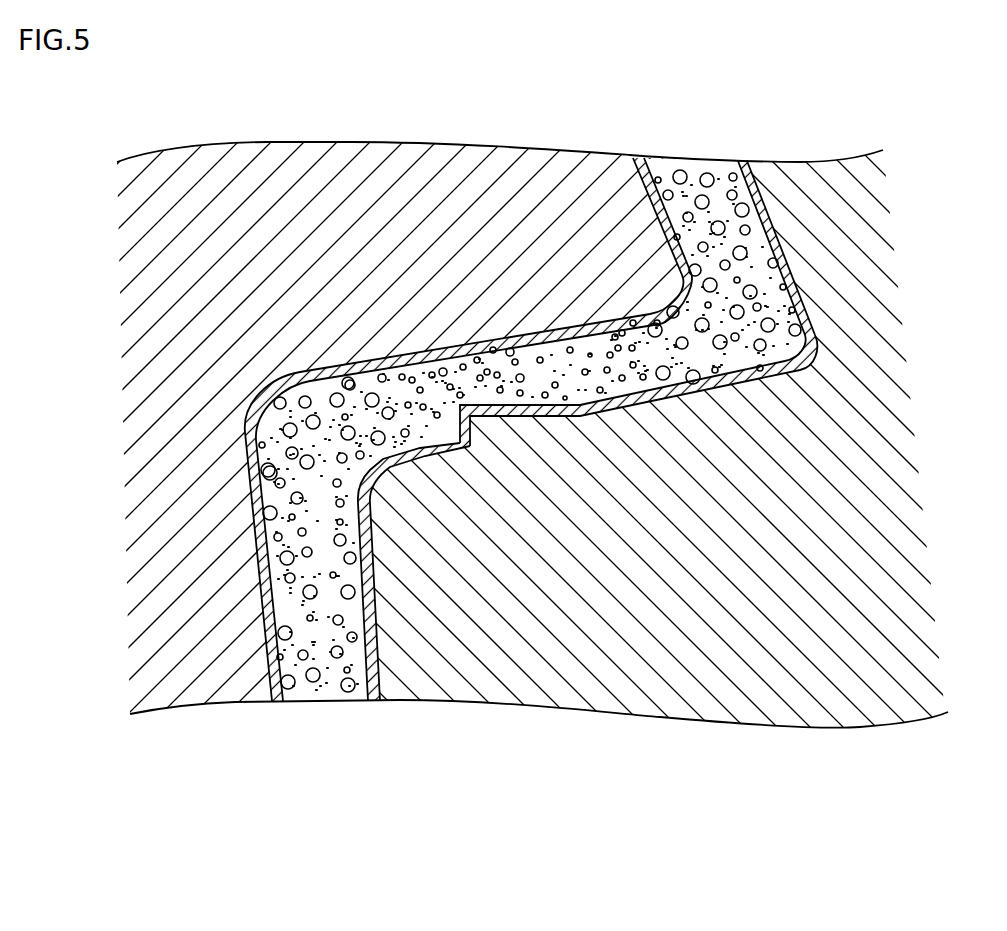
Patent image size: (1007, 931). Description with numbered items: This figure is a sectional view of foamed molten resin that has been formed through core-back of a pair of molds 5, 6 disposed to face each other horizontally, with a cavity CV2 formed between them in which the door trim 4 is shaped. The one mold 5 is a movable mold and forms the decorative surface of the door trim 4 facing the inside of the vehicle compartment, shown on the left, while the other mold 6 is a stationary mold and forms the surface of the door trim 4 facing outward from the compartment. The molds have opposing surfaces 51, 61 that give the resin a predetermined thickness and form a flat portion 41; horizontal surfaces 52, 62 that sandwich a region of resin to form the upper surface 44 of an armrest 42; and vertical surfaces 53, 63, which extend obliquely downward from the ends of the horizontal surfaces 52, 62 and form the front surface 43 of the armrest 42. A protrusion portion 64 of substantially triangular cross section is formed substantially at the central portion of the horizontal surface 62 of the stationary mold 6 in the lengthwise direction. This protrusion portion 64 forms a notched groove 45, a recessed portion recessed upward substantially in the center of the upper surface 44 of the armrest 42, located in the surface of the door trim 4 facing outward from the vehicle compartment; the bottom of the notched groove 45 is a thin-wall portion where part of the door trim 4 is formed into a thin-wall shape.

The door trim 4 is at (782, 212).
The flat portion 41 is at (645, 195).
The armrest 42 is at (248, 486).
The front surface of the armrest 43 is at (266, 601).
The upper surface of the armrest 44 is at (508, 405).
The notched groove 45 is at (558, 417).
The mold 5 is at (122, 368).
The opposing surface 51 is at (680, 220).
The horizontal surface 52 is at (570, 340).
The vertical surface 53 is at (268, 605).
The mold 6 is at (908, 406).
The opposing surface 61 is at (722, 172).
The horizontal surface 62 is at (647, 391).
The vertical surface 63 is at (372, 631).
The protrusion portion 64 is at (482, 345).
The cavity CV2 is at (697, 175).